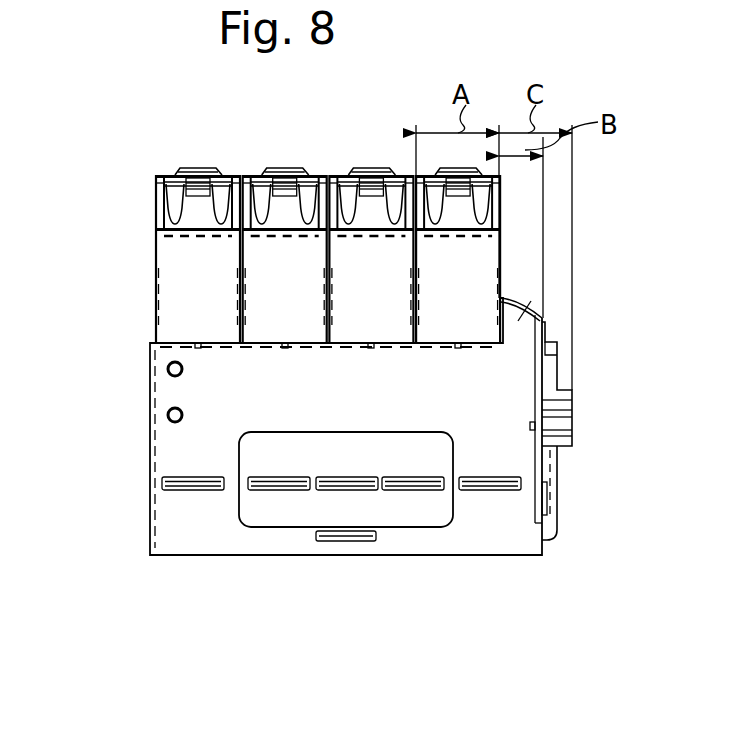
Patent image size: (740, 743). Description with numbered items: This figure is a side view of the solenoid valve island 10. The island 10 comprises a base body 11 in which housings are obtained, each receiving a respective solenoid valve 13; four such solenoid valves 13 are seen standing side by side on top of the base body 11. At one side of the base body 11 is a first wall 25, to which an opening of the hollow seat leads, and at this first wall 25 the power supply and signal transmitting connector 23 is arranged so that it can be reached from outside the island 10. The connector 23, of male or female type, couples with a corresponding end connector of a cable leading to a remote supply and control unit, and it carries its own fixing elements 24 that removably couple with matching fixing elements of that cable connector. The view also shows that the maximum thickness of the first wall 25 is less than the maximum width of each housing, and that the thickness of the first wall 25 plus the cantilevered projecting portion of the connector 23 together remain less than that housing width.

The solenoid valve island 10 is at (347, 387).
The base body 11 is at (148, 447).
The solenoid valve 13 is at (272, 166).
The power supply and signal transmitting connector 23 is at (576, 446).
The fixing elements 24 is at (576, 409).
The first wall 25 is at (523, 320).